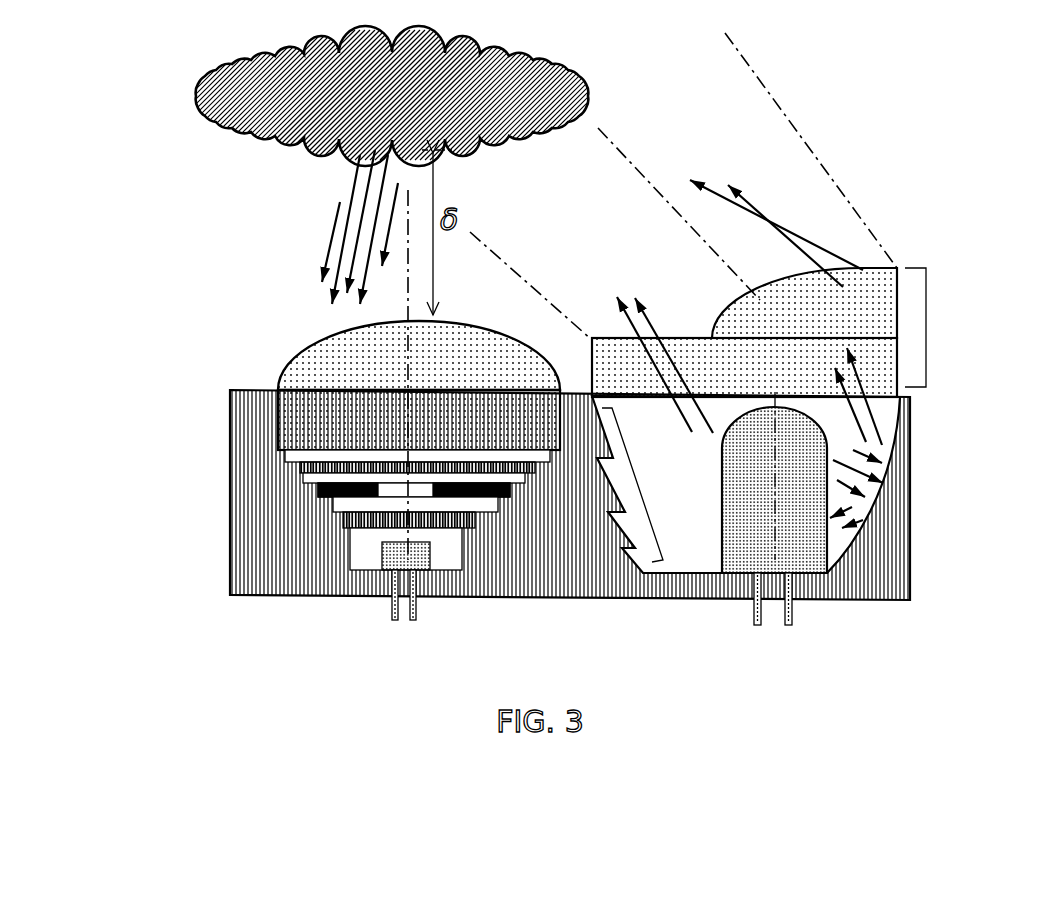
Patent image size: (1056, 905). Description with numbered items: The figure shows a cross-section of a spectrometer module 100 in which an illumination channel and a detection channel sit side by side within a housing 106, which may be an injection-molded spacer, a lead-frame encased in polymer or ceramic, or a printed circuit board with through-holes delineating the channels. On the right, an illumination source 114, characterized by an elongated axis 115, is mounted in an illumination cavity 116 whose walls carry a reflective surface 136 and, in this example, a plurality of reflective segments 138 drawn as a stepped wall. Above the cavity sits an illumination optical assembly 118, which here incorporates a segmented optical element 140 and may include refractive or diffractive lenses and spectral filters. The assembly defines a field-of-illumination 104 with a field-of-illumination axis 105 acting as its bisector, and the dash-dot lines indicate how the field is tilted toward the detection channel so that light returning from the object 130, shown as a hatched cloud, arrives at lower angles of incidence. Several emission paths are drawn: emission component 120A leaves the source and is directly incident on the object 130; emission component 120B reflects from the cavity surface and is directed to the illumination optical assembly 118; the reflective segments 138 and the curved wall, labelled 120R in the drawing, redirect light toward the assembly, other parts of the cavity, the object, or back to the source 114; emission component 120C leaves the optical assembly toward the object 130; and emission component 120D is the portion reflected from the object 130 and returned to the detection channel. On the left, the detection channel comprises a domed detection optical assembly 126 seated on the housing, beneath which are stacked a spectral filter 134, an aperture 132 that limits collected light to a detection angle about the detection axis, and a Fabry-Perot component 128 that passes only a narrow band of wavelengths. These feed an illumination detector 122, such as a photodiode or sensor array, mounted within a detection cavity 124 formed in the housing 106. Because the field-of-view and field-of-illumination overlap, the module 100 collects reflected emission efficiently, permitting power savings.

The spectrometer module 100 is at (255, 330).
The field-of-illumination 104 is at (812, 150).
The field-of-illumination axis 105 is at (603, 135).
The housing 106 is at (594, 566).
The illumination source 114 is at (812, 558).
The elongated axis 115 is at (867, 600).
The illumination cavity 116 is at (652, 456).
The illumination optical assembly 118 is at (942, 327).
The emission component 120A is at (622, 283).
The emission component 120B is at (890, 477).
The emission component 120C is at (708, 170).
The emission component 120D is at (322, 235).
The reflector surface 120R is at (882, 525).
The illumination detector 122 is at (388, 555).
The detection cavity 124 is at (512, 515).
The detection optical assembly 126 is at (424, 370).
The Fabry-Perot component 128 is at (337, 530).
The object 130 is at (378, 108).
The aperture 132 is at (340, 527).
The spectral filter 134 is at (305, 490).
The reflective surface 136 is at (663, 578).
The reflective segments 138 is at (649, 485).
The segmented optical element 140 is at (804, 327).